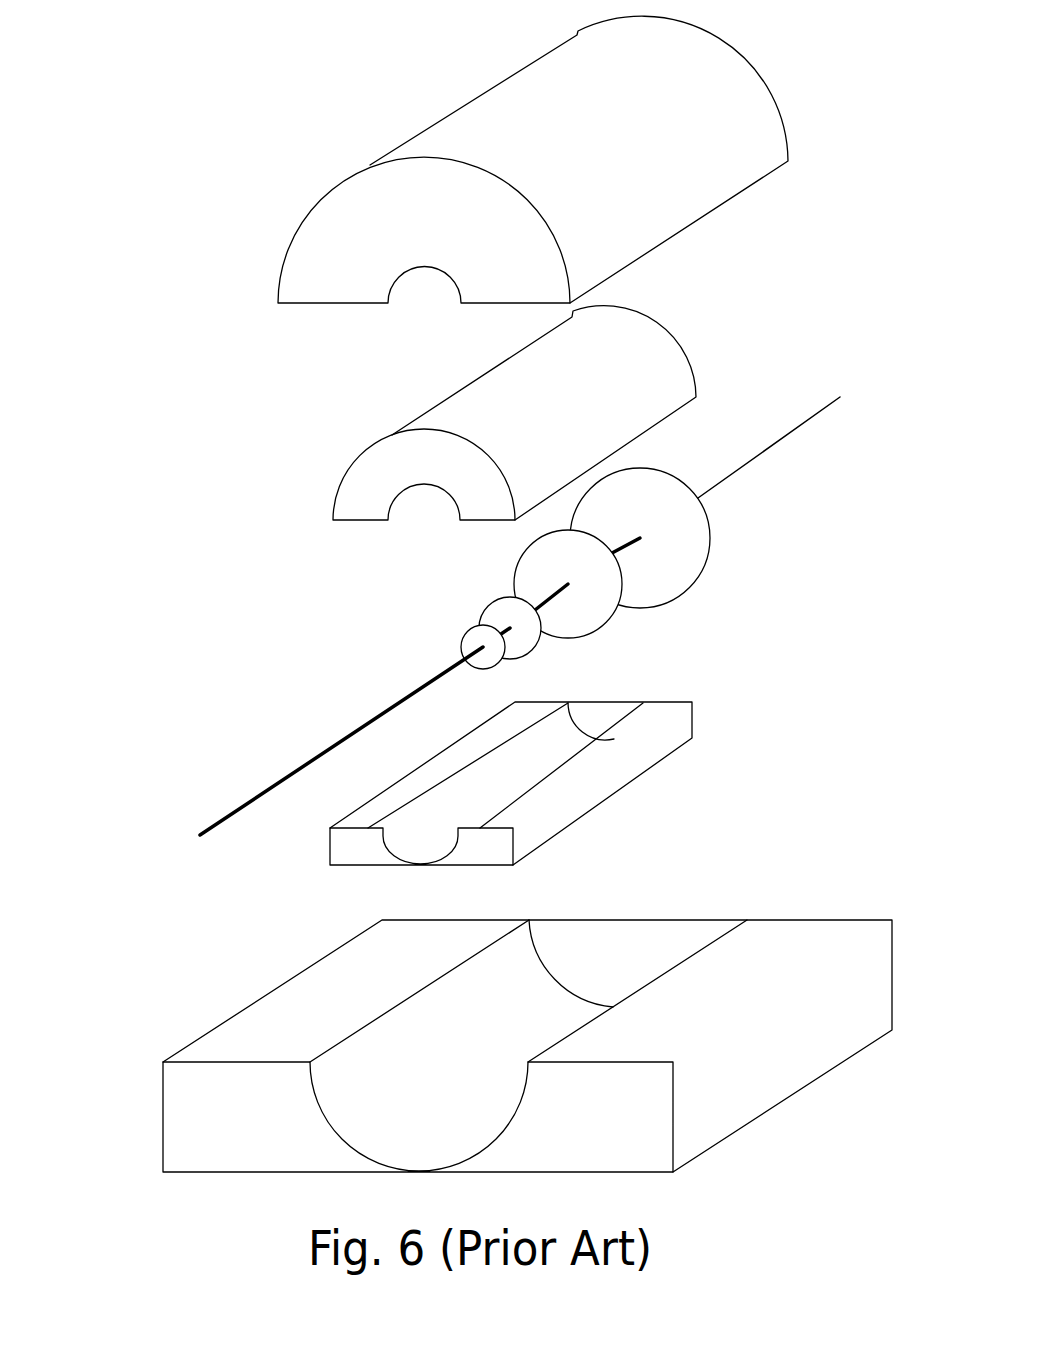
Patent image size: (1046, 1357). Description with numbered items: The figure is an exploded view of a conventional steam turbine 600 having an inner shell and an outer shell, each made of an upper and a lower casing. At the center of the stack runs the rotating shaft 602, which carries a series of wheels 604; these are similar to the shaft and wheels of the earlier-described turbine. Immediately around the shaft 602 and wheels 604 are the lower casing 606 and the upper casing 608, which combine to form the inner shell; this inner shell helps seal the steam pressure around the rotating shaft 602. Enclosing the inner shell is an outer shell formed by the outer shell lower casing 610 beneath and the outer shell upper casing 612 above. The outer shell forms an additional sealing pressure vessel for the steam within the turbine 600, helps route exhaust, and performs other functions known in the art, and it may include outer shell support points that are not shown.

The turbine 600 is at (157, 21).
The shaft 602 is at (260, 792).
The wheels 604 is at (458, 647).
The lower casing 606 is at (610, 798).
The upper casing 608 is at (340, 474).
The outer shell lower casing 610 is at (222, 1025).
The outer shell upper casing 612 is at (300, 225).